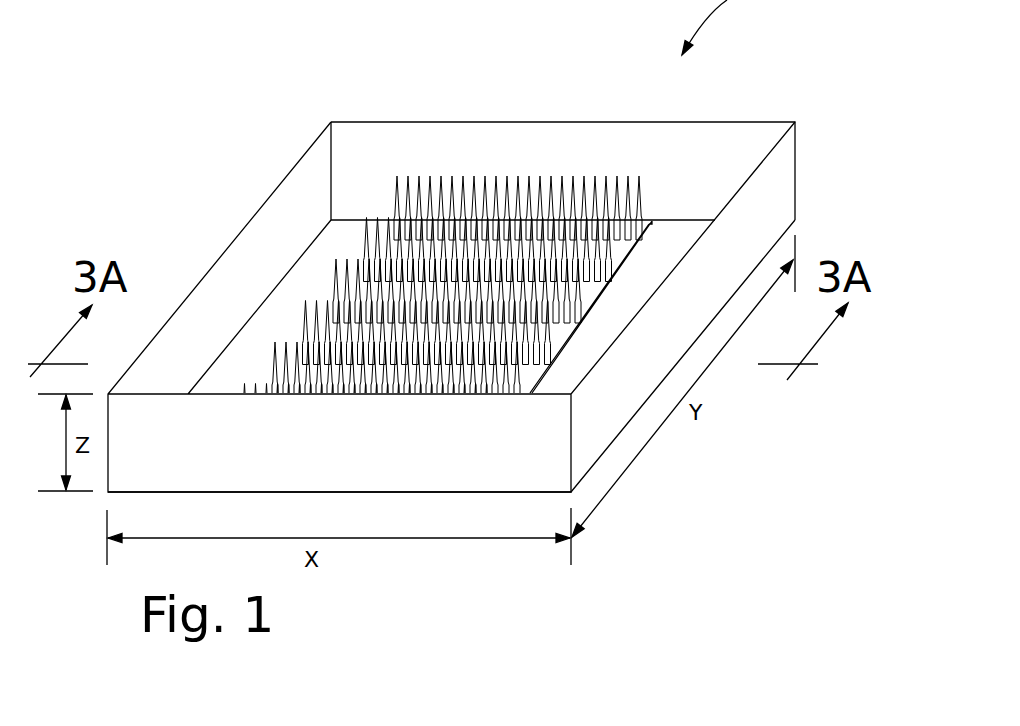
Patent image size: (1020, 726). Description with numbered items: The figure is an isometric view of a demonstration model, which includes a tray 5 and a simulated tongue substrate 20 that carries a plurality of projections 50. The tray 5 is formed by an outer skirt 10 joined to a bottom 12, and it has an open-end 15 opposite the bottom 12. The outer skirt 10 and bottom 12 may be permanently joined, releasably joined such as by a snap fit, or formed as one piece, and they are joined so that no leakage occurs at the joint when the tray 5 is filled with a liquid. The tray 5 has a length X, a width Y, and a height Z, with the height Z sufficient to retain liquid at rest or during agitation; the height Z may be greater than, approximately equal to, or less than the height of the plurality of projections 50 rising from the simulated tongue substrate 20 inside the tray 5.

The tray 5 is at (490, 272).
The outer skirt 10 is at (772, 200).
The bottom 12 is at (472, 493).
The open-end 15 is at (428, 121).
The simulated tongue substrate 20 is at (516, 252).
The plurality of projections 50 is at (577, 187).